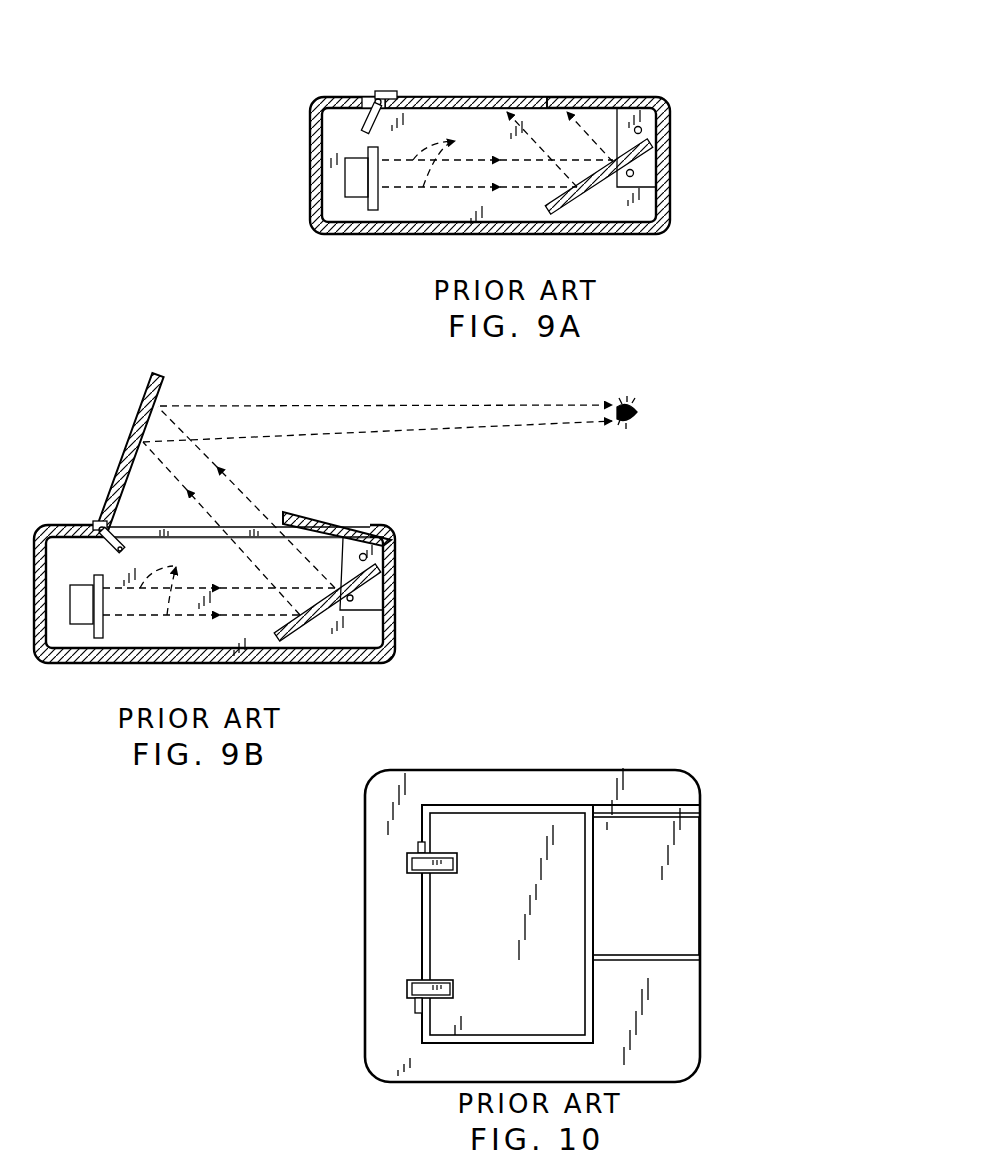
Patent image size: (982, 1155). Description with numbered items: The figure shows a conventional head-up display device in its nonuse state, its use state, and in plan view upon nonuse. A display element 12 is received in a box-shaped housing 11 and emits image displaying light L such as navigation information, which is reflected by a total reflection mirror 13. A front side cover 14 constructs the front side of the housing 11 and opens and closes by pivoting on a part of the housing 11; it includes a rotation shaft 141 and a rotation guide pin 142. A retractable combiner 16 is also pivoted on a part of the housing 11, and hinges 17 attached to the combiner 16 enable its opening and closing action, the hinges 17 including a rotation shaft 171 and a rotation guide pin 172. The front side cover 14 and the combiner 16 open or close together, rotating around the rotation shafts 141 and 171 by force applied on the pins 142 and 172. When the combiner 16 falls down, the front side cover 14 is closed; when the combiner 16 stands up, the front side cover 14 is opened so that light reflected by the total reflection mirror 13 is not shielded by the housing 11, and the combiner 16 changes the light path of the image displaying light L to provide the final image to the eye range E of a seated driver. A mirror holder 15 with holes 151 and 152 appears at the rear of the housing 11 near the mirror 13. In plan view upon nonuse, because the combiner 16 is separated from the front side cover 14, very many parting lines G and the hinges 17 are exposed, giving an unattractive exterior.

In FIG. 9A, the housing 11 is at (410, 223).
In FIG. 9B, the housing 11 is at (188, 656).
In FIG. 10, the housing 11 is at (568, 790).
In FIG. 9A, the display element 12 is at (358, 198).
In FIG. 9B, the display element 12 is at (82, 625).
In FIG. 9A, the total reflection mirror 13 is at (588, 188).
In FIG. 9B, the total reflection mirror 13 is at (327, 610).
In FIG. 9A, the front side cover 14 is at (609, 98).
In FIG. 9B, the front side cover 14 is at (340, 526).
In FIG. 10, the front side cover 14 is at (670, 922).
In FIG. 9A, the rotation shaft 141 is at (642, 129).
In FIG. 9A, the rotation guide pin 142 is at (634, 174).
In FIG. 9B, the mirror holder 15 is at (368, 585).
In FIG. 9B, the hole 151 is at (366, 556).
In FIG. 9B, the hole 152 is at (353, 600).
In FIG. 9A, the combiner 16 is at (463, 98).
In FIG. 9B, the combiner 16 is at (157, 375).
In FIG. 10, the combiner 16 is at (485, 835).
In FIG. 9A, the hinge 17 is at (387, 92).
In FIG. 9B, the hinge 17 is at (106, 520).
In FIG. 10, the hinge 17 is at (410, 985).
In FIG. 9A, the rotation shaft 171 is at (378, 99).
In FIG. 9B, the rotation shaft 171 is at (100, 528).
In FIG. 9A, the rotation guide pin 172 is at (366, 124).
In FIG. 9B, the rotation guide pin 172 is at (118, 552).
In FIG. 9A, the image displaying light L is at (497, 149).
In FIG. 9B, the image displaying light L is at (357, 510).
In FIG. 9B, the eye range E is at (623, 432).
In FIG. 10, the parting lines G is at (641, 810).